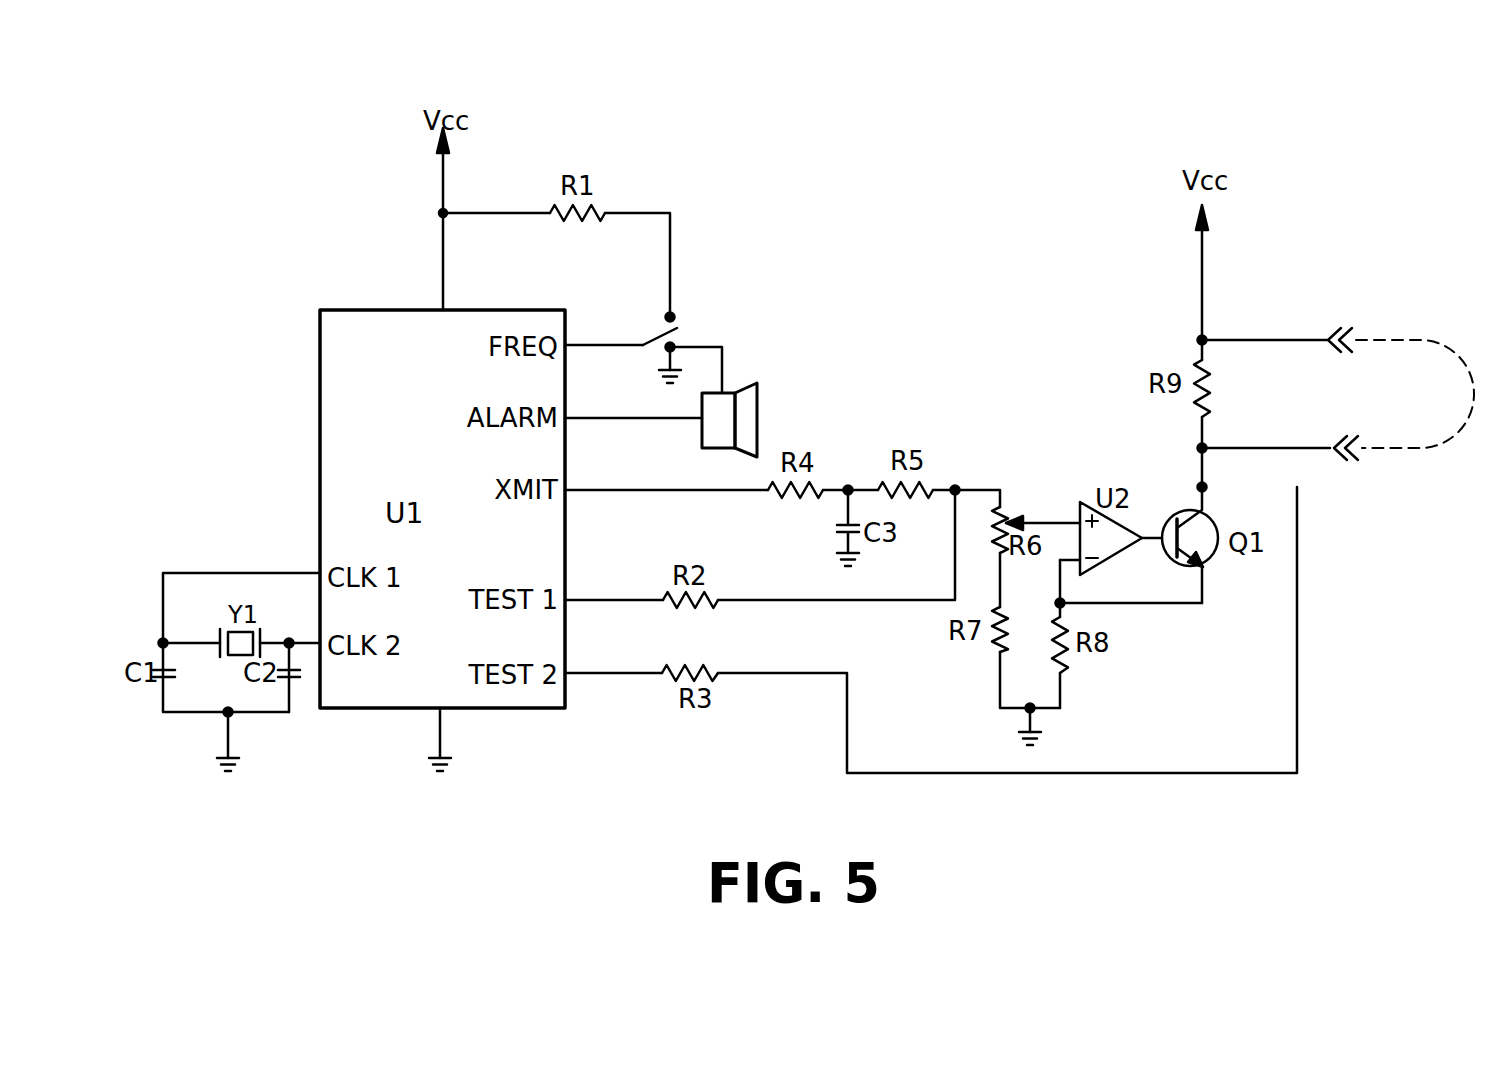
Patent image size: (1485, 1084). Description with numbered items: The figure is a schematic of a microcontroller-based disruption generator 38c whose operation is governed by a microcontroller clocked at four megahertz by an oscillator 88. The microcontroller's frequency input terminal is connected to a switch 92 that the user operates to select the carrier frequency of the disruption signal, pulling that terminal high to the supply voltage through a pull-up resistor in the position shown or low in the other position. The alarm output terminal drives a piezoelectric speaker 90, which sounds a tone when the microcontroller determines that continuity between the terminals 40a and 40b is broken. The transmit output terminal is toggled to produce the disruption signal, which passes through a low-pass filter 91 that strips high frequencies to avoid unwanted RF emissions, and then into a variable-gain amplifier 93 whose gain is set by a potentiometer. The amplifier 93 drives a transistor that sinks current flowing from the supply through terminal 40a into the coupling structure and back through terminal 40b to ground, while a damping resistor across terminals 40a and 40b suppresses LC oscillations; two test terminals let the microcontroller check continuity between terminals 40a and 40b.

The microcontroller-based disruption generator 38c is at (897, 215).
The oscillator 88 is at (248, 558).
The piezoelectric speaker 90 is at (757, 410).
The low-pass filter 91 is at (856, 466).
The switch 92 is at (662, 334).
The variable-gain amplifier 93 is at (1043, 493).
The terminal 40a is at (1333, 336).
The terminal 40b is at (1340, 452).